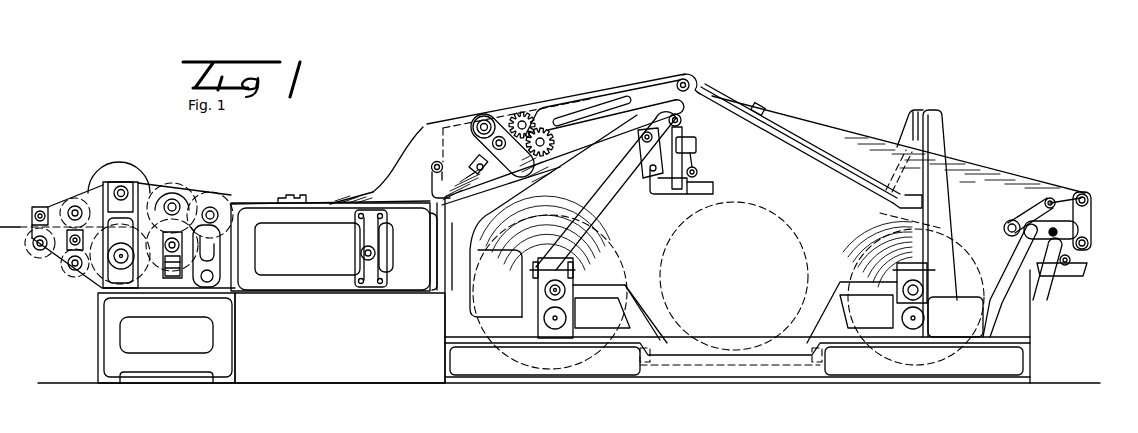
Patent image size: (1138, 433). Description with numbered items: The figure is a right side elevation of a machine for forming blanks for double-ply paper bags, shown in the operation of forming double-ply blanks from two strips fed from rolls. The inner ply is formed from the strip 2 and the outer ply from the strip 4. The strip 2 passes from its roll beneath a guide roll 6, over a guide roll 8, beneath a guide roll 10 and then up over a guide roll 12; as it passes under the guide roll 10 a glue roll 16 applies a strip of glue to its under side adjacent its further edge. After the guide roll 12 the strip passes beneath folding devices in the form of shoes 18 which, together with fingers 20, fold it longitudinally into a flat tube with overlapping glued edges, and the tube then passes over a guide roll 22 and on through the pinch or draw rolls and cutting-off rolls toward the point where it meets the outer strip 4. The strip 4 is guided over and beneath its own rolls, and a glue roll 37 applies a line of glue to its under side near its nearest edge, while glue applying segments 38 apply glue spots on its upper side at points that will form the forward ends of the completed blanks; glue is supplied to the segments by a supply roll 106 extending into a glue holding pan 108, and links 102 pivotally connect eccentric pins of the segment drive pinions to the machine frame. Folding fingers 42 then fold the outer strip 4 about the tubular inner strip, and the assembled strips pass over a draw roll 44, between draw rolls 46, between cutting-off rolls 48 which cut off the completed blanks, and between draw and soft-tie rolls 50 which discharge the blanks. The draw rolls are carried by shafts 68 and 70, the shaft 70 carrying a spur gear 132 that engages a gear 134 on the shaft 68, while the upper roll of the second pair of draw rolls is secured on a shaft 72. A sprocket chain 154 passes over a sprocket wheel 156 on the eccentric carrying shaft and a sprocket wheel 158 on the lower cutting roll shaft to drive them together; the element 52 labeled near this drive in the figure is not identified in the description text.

The strip 2 is at (368, 197).
The strip 4 is at (555, 199).
The guide roll 6 is at (1003, 225).
The guide roll 8 is at (1043, 203).
The guide roll 10 is at (1090, 244).
The guide roll 12 is at (1090, 197).
The glue roll 16 is at (1072, 261).
The shoes 18 is at (902, 187).
The fingers 20 is at (757, 101).
The guide roll 22 is at (694, 82).
The glue roll 37 is at (641, 166).
The segments 38 is at (698, 146).
The folding fingers 42 is at (292, 198).
The draw roll 44 is at (217, 243).
The draw rolls 46 is at (173, 196).
The cutting-off rolls 48 is at (122, 166).
The draw and soft-tie rolls 50 is at (70, 205).
The roller 52 is at (501, 151).
The shaft 68 is at (512, 118).
The shaft 70 is at (563, 136).
The shaft 72 is at (479, 172).
The links 102 is at (683, 122).
The supply roll 106 is at (699, 173).
The glue holding pan 108 is at (714, 188).
The spur gear 132 is at (548, 128).
The gear 134 is at (522, 113).
The sprocket chain 154 is at (567, 200).
The sprocket wheel 156 is at (480, 117).
The sprocket wheel 158 is at (583, 195).